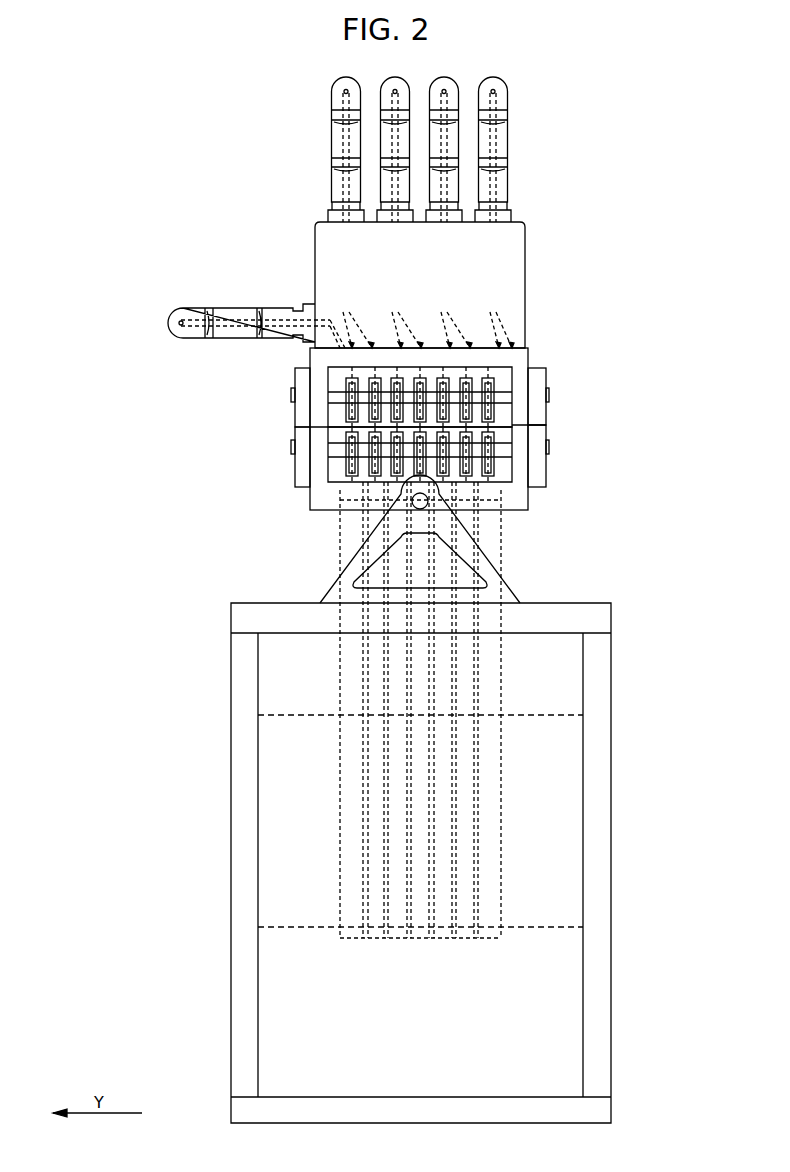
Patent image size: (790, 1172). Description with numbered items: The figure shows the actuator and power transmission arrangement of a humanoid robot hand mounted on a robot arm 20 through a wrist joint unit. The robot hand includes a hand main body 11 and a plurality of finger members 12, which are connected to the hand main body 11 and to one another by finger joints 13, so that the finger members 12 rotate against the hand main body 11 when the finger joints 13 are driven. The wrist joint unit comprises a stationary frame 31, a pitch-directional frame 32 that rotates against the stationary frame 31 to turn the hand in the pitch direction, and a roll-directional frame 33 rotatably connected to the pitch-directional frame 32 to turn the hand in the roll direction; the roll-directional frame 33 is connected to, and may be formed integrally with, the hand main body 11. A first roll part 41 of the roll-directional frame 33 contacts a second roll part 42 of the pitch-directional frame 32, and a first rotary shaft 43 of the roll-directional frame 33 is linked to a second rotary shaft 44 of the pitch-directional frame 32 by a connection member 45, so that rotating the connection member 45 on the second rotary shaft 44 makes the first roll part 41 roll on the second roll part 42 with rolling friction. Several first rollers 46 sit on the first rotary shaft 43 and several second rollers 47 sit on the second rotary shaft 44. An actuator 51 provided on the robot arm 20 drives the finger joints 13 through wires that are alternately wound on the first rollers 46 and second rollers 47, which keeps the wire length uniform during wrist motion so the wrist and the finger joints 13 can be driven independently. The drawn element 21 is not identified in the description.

The hand main body 11 is at (525, 262).
The finger members 12 is at (508, 137).
The finger joints 13 is at (508, 208).
The robot arm 20 is at (618, 807).
The side wall 21 is at (600, 857).
The stationary frame 31 is at (600, 618).
The pitch-directional frame 32 is at (527, 497).
The roll-directional frame 33 is at (528, 352).
The first roll part 41 is at (318, 405).
The second roll part 42 is at (318, 438).
The first rotary shaft 43 is at (546, 395).
The second rotary shaft 44 is at (546, 452).
The connection member 45 is at (540, 423).
The first rollers 46 is at (347, 383).
The second rollers 47 is at (347, 468).
The actuator 51 is at (505, 672).